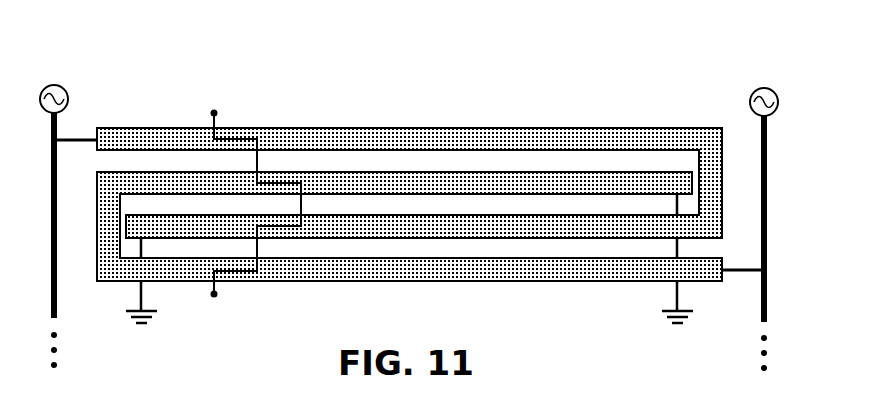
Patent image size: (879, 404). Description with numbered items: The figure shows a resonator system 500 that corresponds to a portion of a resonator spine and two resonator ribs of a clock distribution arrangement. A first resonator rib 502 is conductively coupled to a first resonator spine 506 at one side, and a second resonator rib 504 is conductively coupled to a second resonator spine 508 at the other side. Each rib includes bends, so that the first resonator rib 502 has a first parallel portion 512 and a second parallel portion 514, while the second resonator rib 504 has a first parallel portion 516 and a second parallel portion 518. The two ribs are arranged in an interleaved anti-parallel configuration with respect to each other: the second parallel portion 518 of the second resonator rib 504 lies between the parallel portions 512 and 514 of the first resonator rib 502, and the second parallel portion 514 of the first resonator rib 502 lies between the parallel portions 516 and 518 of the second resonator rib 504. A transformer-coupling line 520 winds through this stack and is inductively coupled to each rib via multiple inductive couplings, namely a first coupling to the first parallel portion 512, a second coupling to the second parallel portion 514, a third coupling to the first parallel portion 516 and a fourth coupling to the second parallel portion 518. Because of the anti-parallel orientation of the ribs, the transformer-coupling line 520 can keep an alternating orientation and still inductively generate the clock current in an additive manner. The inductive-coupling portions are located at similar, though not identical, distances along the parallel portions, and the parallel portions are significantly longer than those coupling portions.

The resonator system 500 is at (108, 55).
The first resonator rib 502 is at (468, 115).
The second resonator rib 504 is at (452, 295).
The first resonator spine 506 is at (57, 300).
The second resonator spine 508 is at (762, 305).
The first parallel portion 512 is at (577, 128).
The second parallel portion 514 is at (577, 214).
The first parallel portion 516 is at (577, 257).
The second parallel portion 518 is at (577, 170).
The transformer-coupling line 520 is at (270, 115).